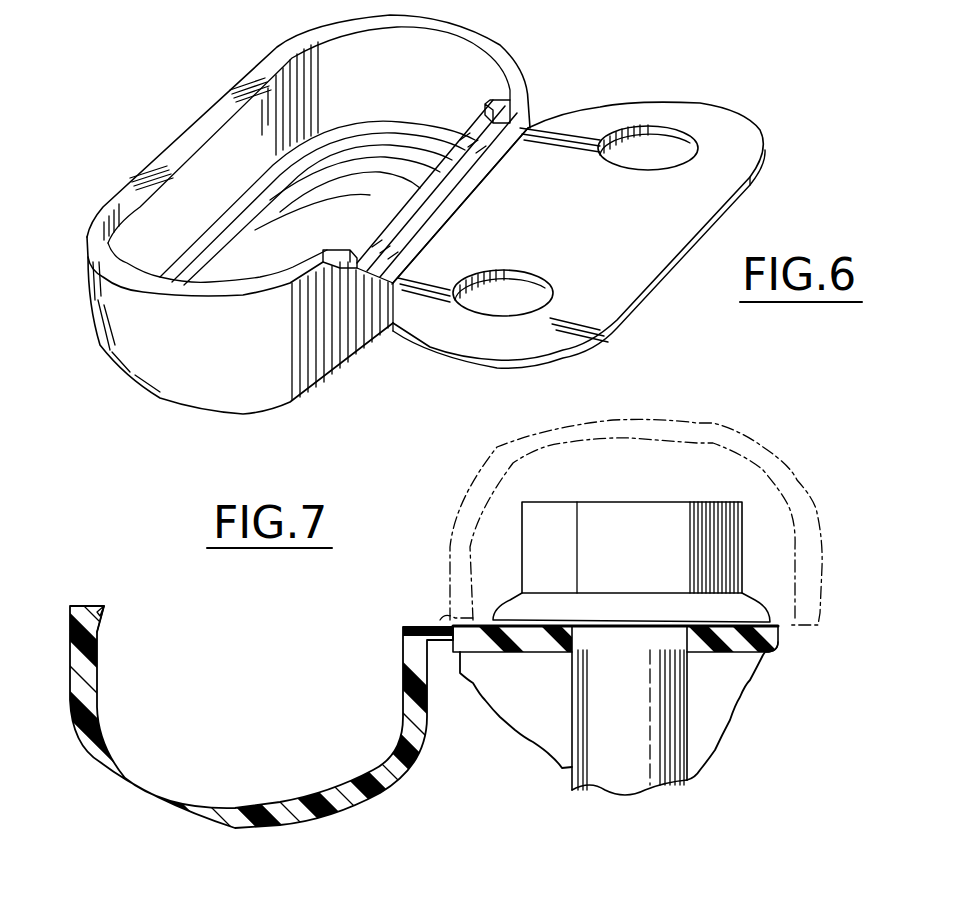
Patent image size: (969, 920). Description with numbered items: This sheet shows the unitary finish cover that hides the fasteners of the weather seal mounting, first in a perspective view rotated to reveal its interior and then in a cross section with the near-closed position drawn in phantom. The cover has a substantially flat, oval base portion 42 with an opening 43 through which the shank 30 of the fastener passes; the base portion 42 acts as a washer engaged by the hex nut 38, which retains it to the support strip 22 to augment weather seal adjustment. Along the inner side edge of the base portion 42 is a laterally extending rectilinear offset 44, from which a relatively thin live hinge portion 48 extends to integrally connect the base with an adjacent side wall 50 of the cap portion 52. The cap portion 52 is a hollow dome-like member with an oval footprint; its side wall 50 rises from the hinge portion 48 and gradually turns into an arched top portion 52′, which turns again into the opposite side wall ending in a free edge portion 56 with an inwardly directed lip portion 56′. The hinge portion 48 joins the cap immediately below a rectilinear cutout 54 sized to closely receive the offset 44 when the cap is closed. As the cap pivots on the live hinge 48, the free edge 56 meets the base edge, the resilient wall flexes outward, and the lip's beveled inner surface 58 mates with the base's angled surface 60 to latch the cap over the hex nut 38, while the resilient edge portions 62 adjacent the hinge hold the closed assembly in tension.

In FIG. 7, the support strip 22 is at (748, 722).
In FIG. 7, the shank 30 is at (600, 773).
In FIG. 7, the hex nut 38 is at (622, 513).
In FIG. 6, the base portion 42 is at (595, 235).
In FIG. 7, the base portion 42 is at (450, 460).
In FIG. 6, the opening 43 is at (512, 278).
In FIG. 7, the opening 43 is at (580, 633).
In FIG. 6, the offset 44 is at (420, 245).
In FIG. 6, the live hinge portion 48 is at (470, 172).
In FIG. 7, the live hinge portion 48 is at (440, 627).
In FIG. 6, the side wall 50 is at (390, 282).
In FIG. 7, the side wall 50 is at (433, 660).
In FIG. 6, the cap portion 52 is at (308, 227).
In FIG. 7, the cap portion 52 is at (450, 596).
In FIG. 6, the top portion 52′ is at (290, 240).
In FIG. 7, the top portion 52′ is at (243, 803).
In FIG. 6, the cutout 54 is at (408, 202).
In FIG. 7, the cutout 54 is at (410, 630).
In FIG. 6, the free edge portion 56 is at (220, 107).
In FIG. 7, the free edge portion 56 is at (72, 604).
In FIG. 6, the lip portion 56′ is at (143, 212).
In FIG. 7, the lip portion 56′ is at (100, 606).
In FIG. 7, the beveled inner surface 58 is at (107, 610).
In FIG. 6, the angled surface 60 is at (700, 235).
In FIG. 7, the angled surface 60 is at (785, 645).
In FIG. 6, the edge portions 62 is at (330, 262).